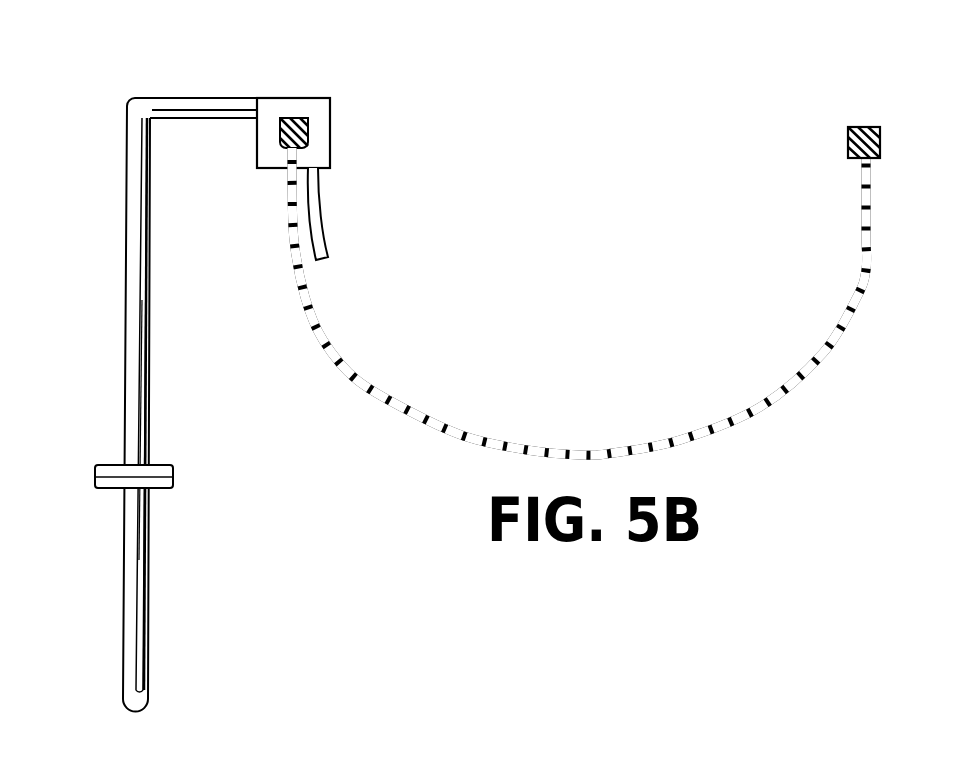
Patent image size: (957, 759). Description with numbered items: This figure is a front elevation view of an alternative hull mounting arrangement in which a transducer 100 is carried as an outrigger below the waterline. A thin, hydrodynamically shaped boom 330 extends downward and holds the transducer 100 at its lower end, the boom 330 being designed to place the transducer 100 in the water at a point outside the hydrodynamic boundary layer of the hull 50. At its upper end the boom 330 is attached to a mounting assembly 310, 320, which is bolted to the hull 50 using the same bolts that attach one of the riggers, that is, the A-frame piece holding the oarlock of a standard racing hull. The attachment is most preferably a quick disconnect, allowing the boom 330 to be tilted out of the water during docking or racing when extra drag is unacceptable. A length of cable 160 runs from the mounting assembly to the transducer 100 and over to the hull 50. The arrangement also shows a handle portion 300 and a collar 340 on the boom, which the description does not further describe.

The hull 50 is at (857, 270).
The transducer 100 is at (142, 568).
The length of cable 160 is at (322, 224).
The handle 300 is at (231, 92).
The mounting assembly 310 is at (300, 98).
The mounting assembly 320 is at (186, 117).
The boom 330 is at (130, 292).
The collar 340 is at (100, 469).